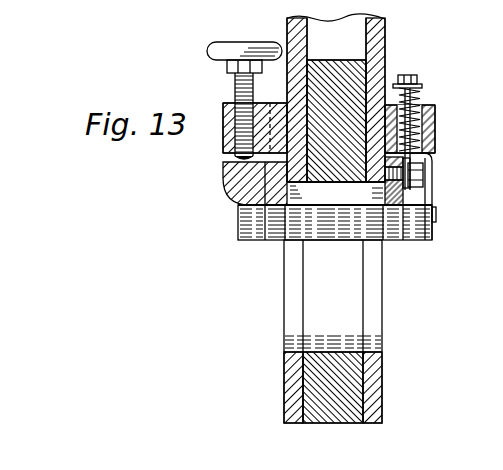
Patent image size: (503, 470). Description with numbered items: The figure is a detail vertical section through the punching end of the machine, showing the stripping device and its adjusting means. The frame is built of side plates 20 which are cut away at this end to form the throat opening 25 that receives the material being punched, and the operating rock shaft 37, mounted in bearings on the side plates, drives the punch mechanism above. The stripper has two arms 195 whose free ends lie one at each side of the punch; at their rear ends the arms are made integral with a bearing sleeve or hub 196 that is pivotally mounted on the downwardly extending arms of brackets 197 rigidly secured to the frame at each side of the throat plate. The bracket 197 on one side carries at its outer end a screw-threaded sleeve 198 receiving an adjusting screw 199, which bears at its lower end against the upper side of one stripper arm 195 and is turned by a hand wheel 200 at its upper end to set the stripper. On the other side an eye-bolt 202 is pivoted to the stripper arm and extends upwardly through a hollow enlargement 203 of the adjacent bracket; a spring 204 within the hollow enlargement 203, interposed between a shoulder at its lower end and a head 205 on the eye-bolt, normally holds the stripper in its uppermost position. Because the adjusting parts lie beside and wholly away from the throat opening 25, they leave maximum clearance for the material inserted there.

The side plate 20 is at (300, 34).
The throat opening 25 is at (325, 290).
The operating rock shaft 37 is at (395, 0).
The stripper arm 195 is at (398, 190).
The bearing sleeve or hub 196 is at (337, 233).
The bracket 197 is at (429, 192).
The screw-threaded sleeve 198 is at (236, 112).
The adjusting screw 199 is at (230, 69).
The hand wheel 200 is at (237, 38).
The eye-bolt 202 is at (433, 156).
The hollow enlargement 203 is at (436, 120).
The spring 204 is at (420, 103).
The head 205 is at (415, 76).